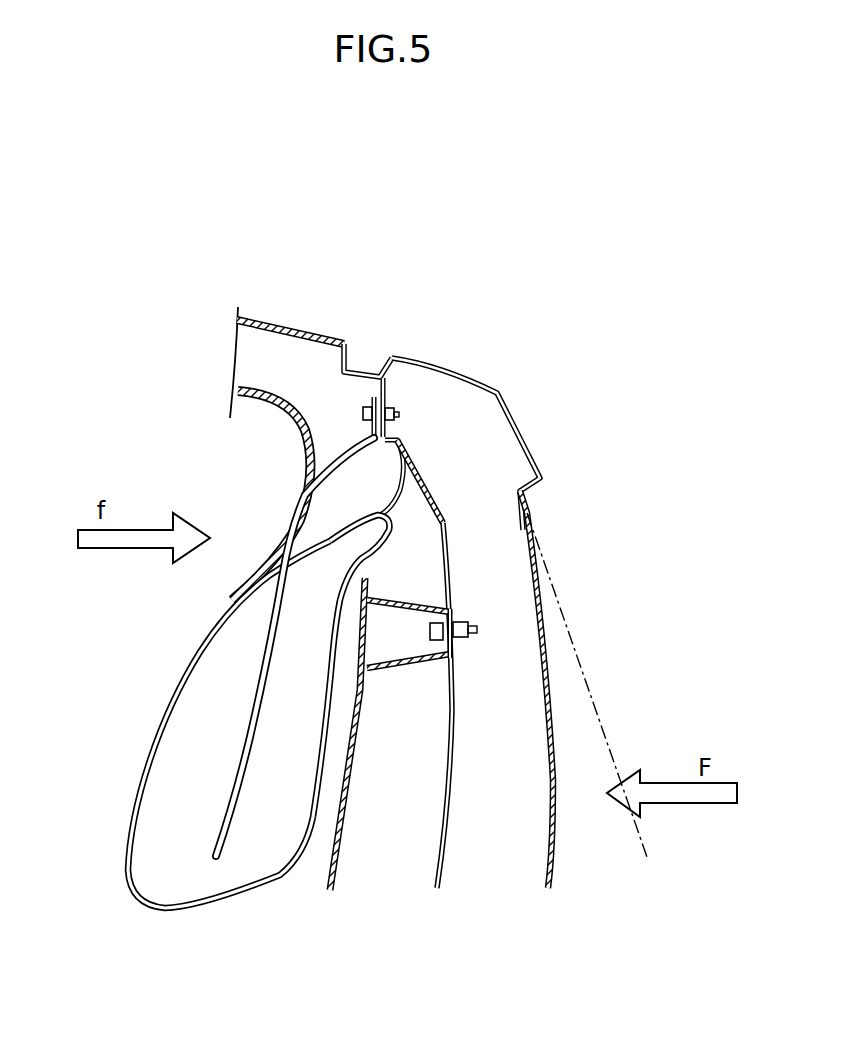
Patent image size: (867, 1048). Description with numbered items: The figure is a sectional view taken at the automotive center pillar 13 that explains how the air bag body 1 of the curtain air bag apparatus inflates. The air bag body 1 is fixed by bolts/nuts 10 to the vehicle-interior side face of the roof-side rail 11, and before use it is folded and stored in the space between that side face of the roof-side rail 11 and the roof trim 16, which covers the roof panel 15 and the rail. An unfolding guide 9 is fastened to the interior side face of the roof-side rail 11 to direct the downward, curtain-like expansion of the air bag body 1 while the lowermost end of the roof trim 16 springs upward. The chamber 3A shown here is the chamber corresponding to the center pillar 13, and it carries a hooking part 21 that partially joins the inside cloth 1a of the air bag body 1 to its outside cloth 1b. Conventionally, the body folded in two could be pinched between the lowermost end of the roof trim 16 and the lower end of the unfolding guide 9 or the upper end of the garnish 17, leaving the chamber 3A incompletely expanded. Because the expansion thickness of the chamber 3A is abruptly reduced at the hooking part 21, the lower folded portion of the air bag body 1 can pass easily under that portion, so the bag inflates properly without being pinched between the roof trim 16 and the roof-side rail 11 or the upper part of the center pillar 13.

The air bag body 1 is at (212, 697).
The inside cloth 1a is at (170, 697).
The outside cloth 1b is at (247, 717).
The chamber 3A is at (161, 850).
The unfolding guide 9 is at (428, 538).
The bolts/nuts 10 is at (399, 414).
The roof-side rail 11 is at (507, 397).
The center pillar 13 is at (550, 663).
The roof panel 15 is at (290, 327).
The roof trim 16 is at (290, 417).
The garnish 17 is at (333, 857).
The hooking part 21 is at (279, 567).